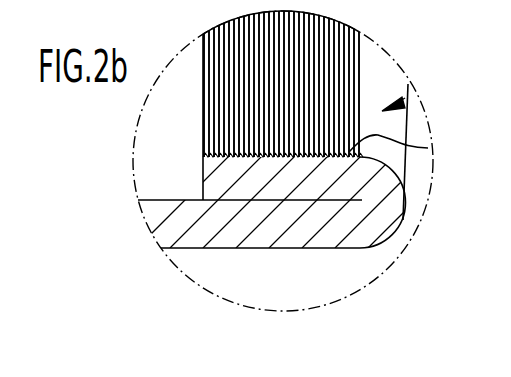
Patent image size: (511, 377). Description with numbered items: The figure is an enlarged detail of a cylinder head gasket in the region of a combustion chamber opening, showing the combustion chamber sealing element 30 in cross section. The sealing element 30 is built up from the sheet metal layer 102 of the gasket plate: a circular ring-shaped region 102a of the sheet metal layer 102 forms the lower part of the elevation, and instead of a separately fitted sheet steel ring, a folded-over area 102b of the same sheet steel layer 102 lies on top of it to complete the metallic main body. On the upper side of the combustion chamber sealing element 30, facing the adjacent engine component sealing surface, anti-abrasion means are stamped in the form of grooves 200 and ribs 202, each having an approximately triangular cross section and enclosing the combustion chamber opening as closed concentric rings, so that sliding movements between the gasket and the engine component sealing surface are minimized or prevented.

The combustion chamber sealing element 30 is at (408, 96).
The sheet metal layer 102 is at (183, 222).
The circular ring-shaped region 102a is at (287, 223).
The folded-over area 102b is at (223, 181).
The grooves 200 is at (352, 132).
The ribs 202 is at (347, 60).